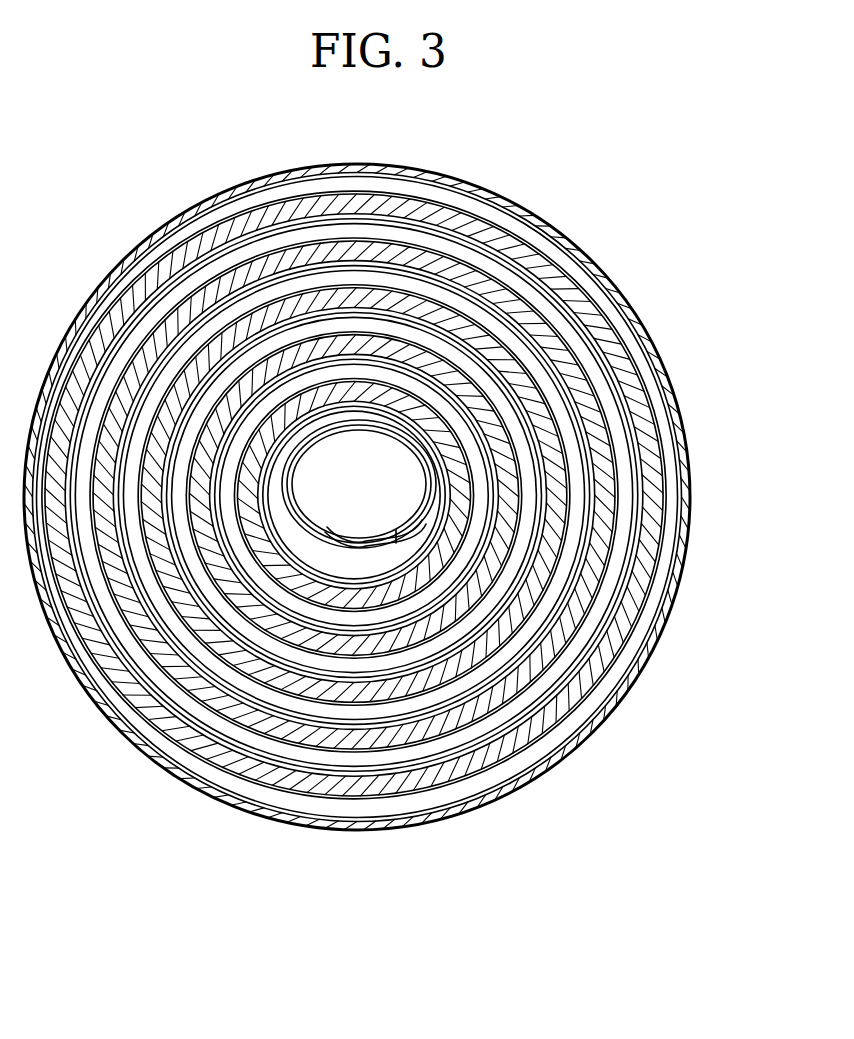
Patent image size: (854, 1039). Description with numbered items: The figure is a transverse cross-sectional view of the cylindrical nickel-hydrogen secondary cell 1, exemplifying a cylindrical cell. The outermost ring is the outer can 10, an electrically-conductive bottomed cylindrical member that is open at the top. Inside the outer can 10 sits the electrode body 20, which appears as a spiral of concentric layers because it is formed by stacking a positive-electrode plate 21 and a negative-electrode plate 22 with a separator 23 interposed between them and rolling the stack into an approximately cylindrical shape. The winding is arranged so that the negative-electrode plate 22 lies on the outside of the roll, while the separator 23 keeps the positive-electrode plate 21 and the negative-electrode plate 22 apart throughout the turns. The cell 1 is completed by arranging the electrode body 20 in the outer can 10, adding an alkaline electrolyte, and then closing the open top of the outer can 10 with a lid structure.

The nickel-hydrogen secondary cell 1 is at (660, 253).
The outer can 10 is at (147, 758).
The electrode body 20 is at (237, 800).
The positive-electrode plate 21 is at (562, 710).
The negative-electrode plate 22 is at (417, 807).
The separator 23 is at (533, 717).